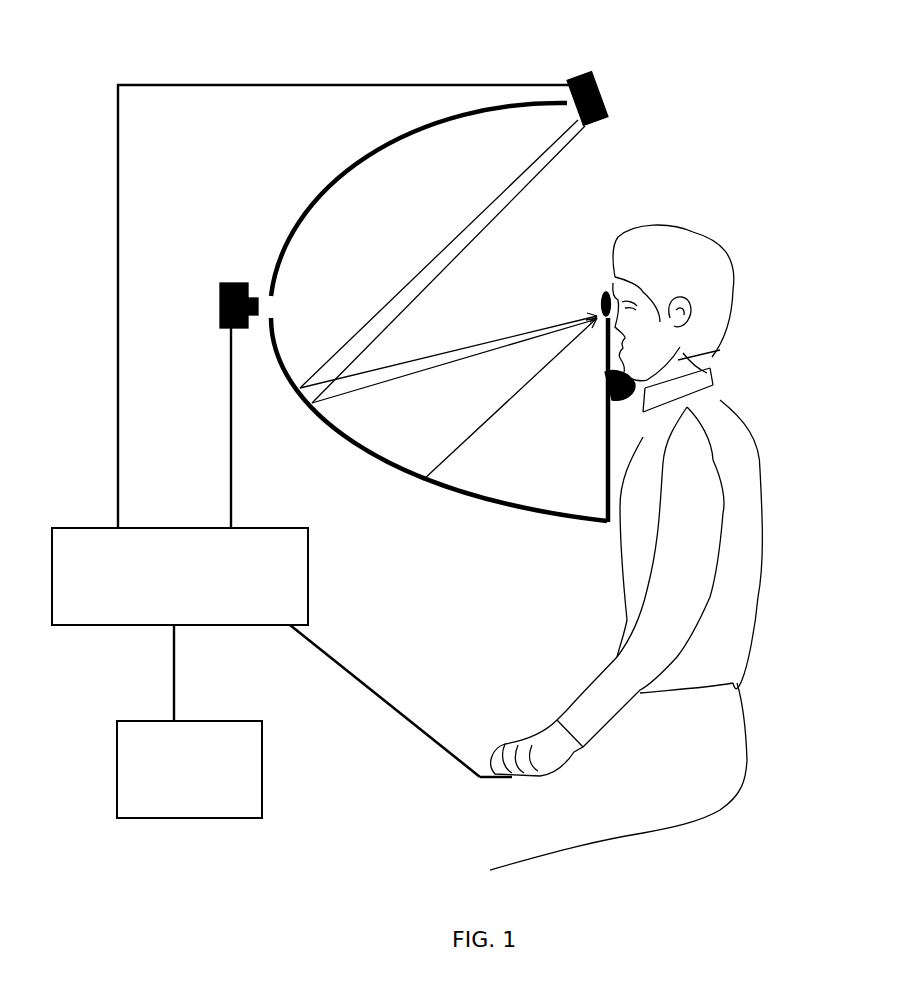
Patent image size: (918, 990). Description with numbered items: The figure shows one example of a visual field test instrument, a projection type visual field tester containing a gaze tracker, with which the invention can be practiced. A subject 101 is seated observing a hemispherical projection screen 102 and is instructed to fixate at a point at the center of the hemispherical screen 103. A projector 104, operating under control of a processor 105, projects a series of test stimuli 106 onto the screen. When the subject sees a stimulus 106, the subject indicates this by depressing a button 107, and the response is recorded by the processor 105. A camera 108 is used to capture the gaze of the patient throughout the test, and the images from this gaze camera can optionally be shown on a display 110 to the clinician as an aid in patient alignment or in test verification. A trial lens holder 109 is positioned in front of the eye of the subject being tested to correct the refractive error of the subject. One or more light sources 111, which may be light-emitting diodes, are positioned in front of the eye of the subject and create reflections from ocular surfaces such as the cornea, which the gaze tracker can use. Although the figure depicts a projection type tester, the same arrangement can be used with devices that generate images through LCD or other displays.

The subject 101 is at (736, 248).
The hemispherical projection screen 102 is at (385, 145).
The center of the hemispherical screen 103 is at (275, 307).
The projector 104 is at (612, 92).
The processor 105 is at (78, 626).
The test stimuli 106 is at (290, 400).
The button 107 is at (493, 737).
The camera 108 is at (232, 278).
The trial lens holder 109 is at (605, 280).
The display 110 is at (117, 767).
The light sources 111 is at (318, 427).